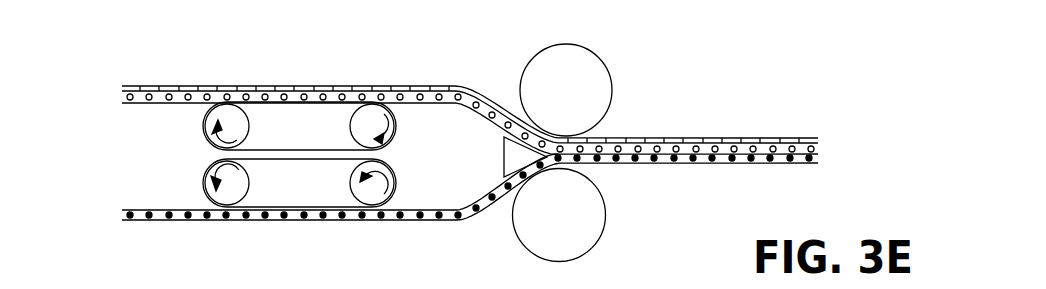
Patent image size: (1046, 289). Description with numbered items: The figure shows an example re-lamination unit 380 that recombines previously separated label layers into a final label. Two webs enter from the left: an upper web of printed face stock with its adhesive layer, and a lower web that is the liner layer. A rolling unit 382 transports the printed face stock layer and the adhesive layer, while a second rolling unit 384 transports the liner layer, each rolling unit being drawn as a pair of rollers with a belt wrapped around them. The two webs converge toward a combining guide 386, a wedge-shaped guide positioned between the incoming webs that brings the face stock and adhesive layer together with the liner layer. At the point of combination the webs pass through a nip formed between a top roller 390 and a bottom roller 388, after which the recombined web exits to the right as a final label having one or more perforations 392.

The re-lamination unit 380 is at (147, 63).
The rolling unit 382 is at (193, 126).
The rolling unit 384 is at (183, 183).
The combining guide 386 is at (500, 148).
The bottom roller 388 is at (590, 210).
The top roller 390 is at (597, 88).
The perforations 392 is at (697, 137).